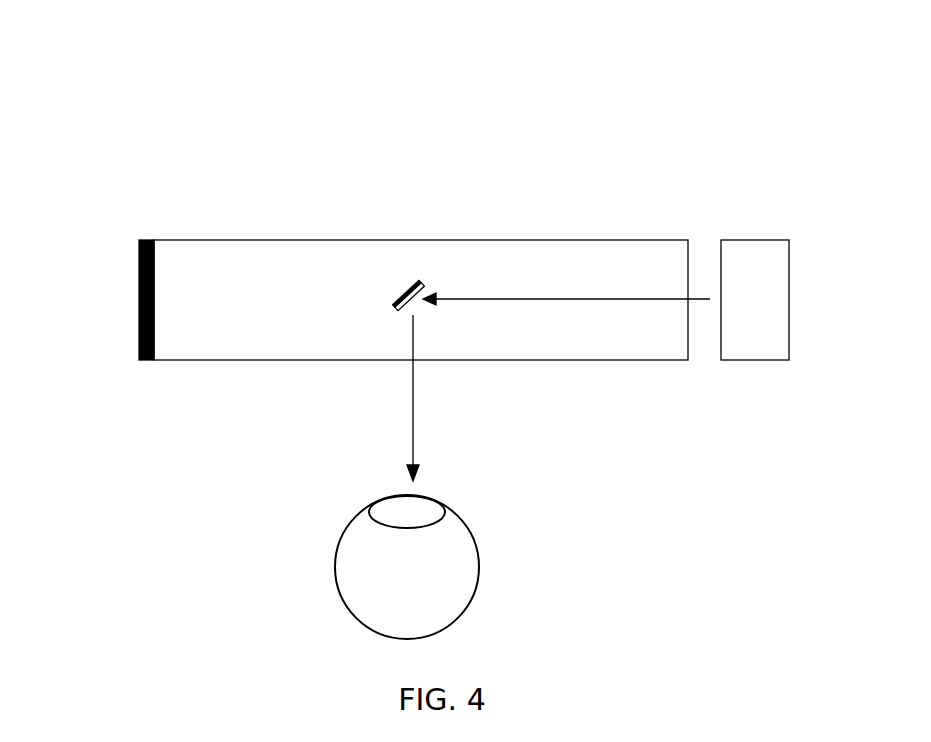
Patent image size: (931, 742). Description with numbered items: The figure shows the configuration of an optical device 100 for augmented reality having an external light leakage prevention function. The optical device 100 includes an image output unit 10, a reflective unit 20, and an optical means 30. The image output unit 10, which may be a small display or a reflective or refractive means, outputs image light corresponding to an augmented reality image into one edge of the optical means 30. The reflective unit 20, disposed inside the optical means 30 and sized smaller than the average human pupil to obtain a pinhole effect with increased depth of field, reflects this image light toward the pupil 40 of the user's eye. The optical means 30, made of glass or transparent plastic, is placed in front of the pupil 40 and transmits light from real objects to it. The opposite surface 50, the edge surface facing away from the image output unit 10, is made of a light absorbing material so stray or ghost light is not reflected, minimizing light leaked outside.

The optical device for augmented reality 100 is at (715, 118).
The image output unit 10 is at (755, 240).
The reflective unit 20 is at (417, 282).
The optical means 30 is at (571, 240).
The pupil 40 is at (432, 500).
The opposite surface 50 is at (139, 260).